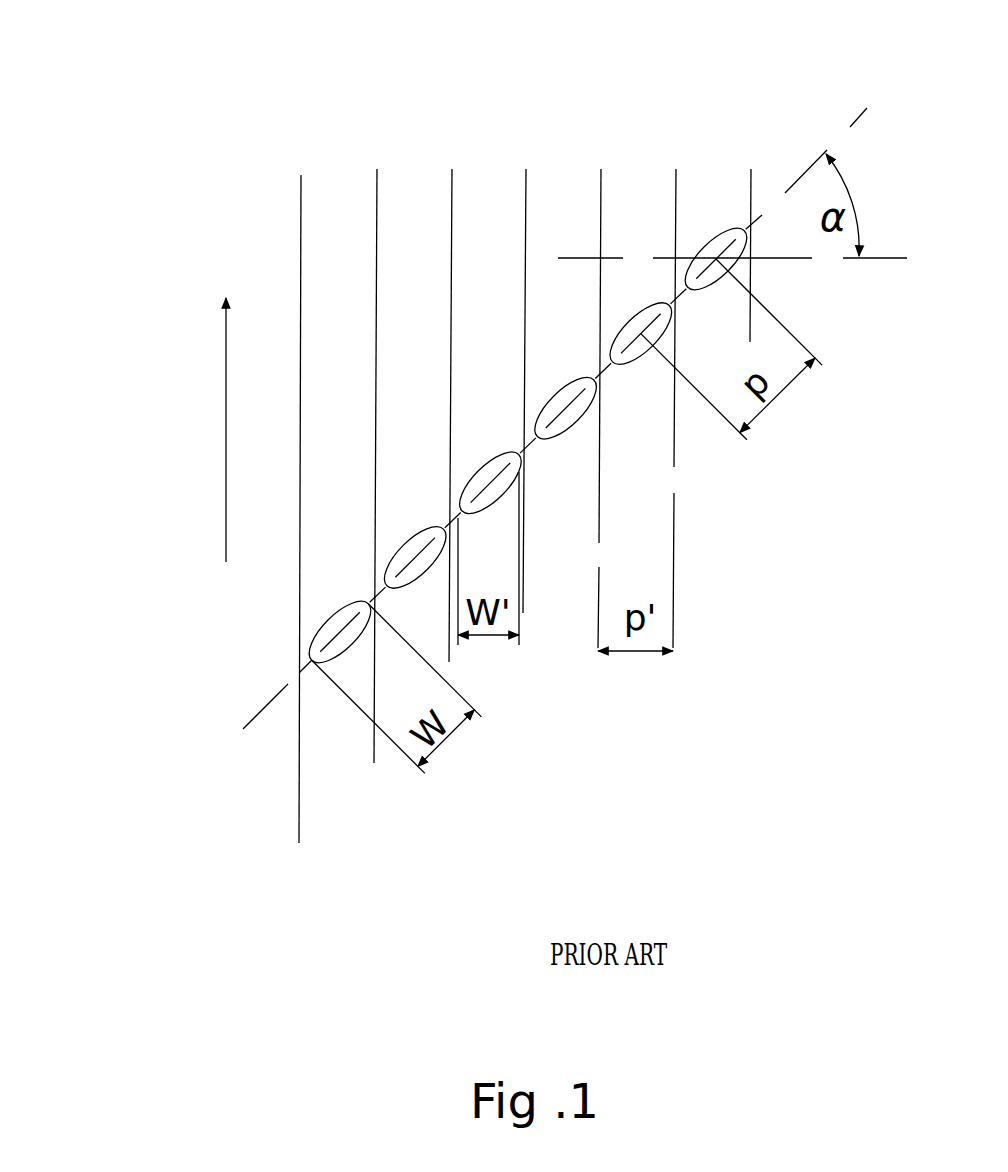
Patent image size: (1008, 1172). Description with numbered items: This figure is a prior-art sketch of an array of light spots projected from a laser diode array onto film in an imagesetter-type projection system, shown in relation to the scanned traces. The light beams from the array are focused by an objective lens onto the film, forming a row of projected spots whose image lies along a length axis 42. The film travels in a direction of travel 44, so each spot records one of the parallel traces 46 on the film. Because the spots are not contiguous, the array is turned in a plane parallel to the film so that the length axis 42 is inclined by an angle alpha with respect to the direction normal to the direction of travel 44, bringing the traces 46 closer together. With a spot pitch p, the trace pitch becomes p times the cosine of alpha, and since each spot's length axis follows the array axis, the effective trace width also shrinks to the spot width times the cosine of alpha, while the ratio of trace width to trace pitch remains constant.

The length axis 42 is at (858, 117).
The direction of travel 44 is at (207, 408).
The traces 46 is at (555, 167).